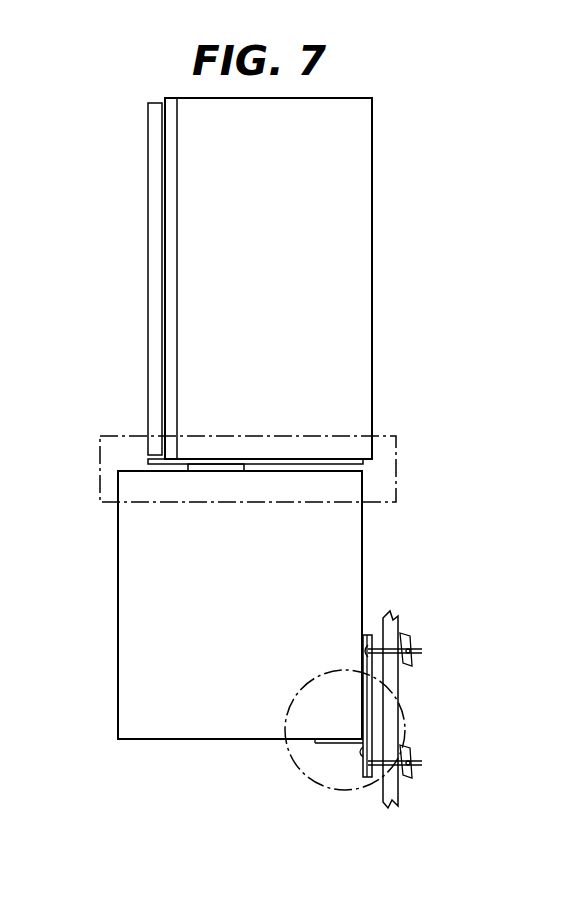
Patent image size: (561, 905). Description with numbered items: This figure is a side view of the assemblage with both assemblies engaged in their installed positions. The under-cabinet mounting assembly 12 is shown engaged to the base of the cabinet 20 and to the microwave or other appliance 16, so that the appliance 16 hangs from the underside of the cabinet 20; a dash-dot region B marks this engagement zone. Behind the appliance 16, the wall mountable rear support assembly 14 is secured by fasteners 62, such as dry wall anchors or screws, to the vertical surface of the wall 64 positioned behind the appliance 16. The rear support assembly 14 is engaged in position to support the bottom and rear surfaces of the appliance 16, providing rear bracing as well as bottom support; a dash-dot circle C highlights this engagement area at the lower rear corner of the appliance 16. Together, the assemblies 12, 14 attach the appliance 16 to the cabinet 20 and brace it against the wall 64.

The cabinet 20 is at (348, 207).
The under-cabinet mounting assembly 12 is at (382, 470).
The appliance 16 is at (134, 644).
The detail region B is at (383, 504).
The rear support assembly 14 is at (382, 818).
The wall 64 is at (398, 621).
The fasteners 62 is at (420, 652).
The detail region C is at (328, 787).